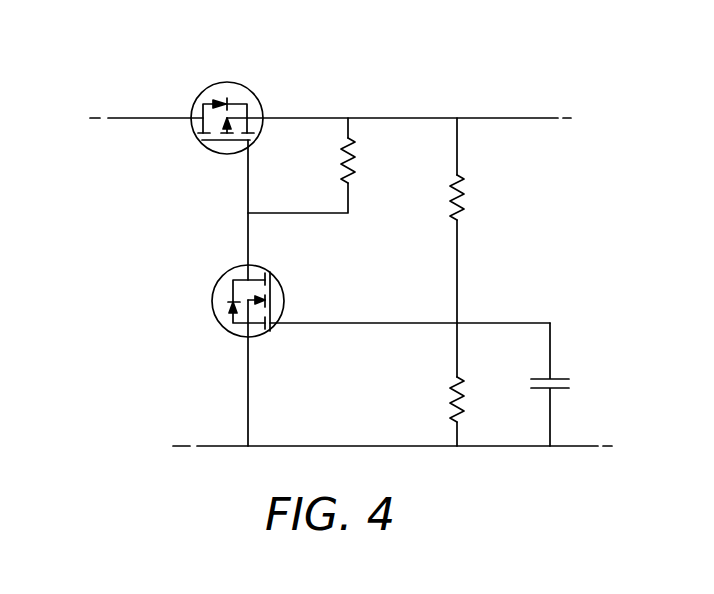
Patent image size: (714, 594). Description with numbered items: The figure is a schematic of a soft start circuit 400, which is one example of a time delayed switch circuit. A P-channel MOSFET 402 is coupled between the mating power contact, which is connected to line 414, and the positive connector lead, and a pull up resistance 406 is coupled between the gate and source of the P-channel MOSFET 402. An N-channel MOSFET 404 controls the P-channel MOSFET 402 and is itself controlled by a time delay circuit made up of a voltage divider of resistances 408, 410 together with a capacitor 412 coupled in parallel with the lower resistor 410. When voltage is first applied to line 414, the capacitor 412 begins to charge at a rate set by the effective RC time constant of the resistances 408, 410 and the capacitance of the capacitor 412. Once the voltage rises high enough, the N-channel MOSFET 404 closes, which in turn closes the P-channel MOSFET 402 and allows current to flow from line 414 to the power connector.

The soft start circuit 400 is at (82, 50).
The P-channel MOSFET 402 is at (211, 92).
The N-channel MOSFET 404 is at (224, 274).
The pull up resistance 406 is at (357, 156).
The resistance 408 is at (465, 192).
The lower resistor 410 is at (466, 394).
The capacitor 412 is at (558, 378).
The line 414 is at (525, 117).